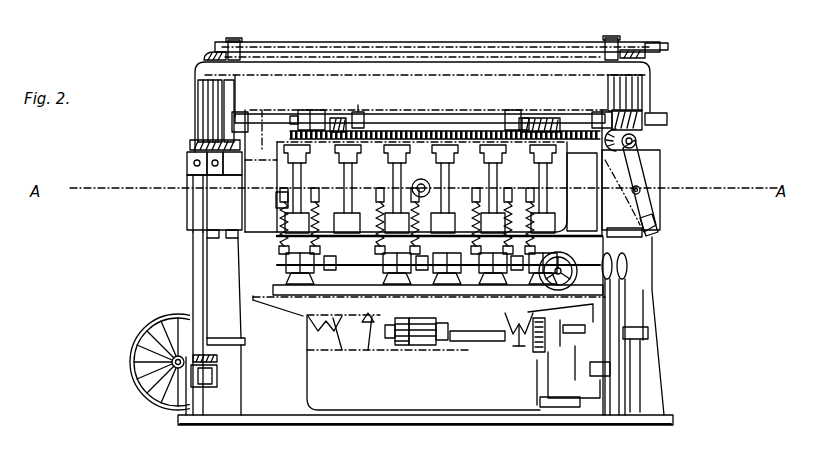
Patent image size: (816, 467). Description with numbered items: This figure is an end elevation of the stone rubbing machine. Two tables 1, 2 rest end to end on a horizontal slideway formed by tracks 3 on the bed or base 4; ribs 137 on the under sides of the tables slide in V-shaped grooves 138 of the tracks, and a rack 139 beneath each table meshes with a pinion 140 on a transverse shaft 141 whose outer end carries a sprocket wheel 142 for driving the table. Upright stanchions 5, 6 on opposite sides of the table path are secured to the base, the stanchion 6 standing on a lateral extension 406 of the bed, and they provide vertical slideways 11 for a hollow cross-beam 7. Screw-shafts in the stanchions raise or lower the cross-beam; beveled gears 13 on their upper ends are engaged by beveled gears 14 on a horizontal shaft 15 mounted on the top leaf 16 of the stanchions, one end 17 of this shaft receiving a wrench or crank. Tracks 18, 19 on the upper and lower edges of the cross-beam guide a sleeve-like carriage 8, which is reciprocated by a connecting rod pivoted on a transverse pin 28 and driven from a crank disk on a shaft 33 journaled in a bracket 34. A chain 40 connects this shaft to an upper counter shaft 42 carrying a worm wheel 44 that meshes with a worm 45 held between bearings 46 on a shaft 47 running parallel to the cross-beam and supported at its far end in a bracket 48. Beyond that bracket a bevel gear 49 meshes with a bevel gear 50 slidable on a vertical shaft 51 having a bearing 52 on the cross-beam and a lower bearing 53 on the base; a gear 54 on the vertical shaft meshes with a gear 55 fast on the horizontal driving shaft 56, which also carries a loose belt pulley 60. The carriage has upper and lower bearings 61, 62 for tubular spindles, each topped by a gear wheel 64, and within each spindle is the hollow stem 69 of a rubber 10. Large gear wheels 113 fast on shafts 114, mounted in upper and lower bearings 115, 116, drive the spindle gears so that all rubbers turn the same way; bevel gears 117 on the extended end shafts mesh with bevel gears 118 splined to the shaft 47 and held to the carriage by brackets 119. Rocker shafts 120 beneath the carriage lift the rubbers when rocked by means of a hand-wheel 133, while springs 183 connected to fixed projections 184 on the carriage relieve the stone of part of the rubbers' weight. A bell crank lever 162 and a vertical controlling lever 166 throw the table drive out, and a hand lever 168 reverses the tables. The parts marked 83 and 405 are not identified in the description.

The table 1 is at (366, 315).
The table 2 is at (314, 182).
The tracks 3 is at (313, 318).
The bed or base 4 is at (443, 362).
The stanchion 5 is at (192, 267).
The stanchion 6 is at (640, 272).
The cross-beam 7 is at (261, 171).
The carriage 8 is at (439, 173).
The rubbers 10 is at (280, 284).
The vertical slideways 11 is at (643, 92).
The beveled gears 13 is at (213, 53).
The beveled gears 14 is at (234, 41).
The horizontal shaft 15 is at (410, 43).
The top leaf 16 is at (352, 63).
The end of shaft 17 is at (670, 46).
The track 18 is at (261, 158).
The track 19 is at (250, 241).
The transverse pin 28 is at (421, 179).
The shaft 33 is at (641, 190).
The bracket 34 is at (656, 222).
The chain 40 is at (660, 164).
The upper counter shaft 42 is at (640, 142).
The worm wheel 44 is at (650, 128).
The worm 45 is at (640, 110).
The bearings 46 is at (606, 114).
The shaft 47 is at (425, 115).
The bracket 48 is at (232, 166).
The bevel gear 49 is at (213, 107).
The bevel gear 50 is at (192, 143).
The vertical shaft 51 is at (202, 206).
The bearing 52 is at (186, 164).
The lower bearing 53 is at (218, 378).
The gear 54 is at (215, 364).
The gear 55 is at (170, 358).
The horizontal driving shaft 56 is at (170, 374).
The loose belt pulley 60 is at (130, 378).
The upper bearings 61 is at (409, 189).
The lower bearings 62 is at (509, 194).
The gear wheel 64 is at (393, 133).
The stem 69 is at (282, 246).
The plunger 83 is at (392, 184).
The large gear wheels 113 is at (447, 132).
The shafts 114 is at (344, 190).
The upper bearings 115 is at (352, 140).
The lower bearings 116 is at (338, 317).
The bevel gears 117 is at (338, 117).
The bevel gears 118 is at (521, 110).
The brackets 119 is at (311, 117).
The rocker shafts 120 is at (372, 347).
The hand-wheel 133 is at (571, 262).
The ribs 137 is at (520, 320).
The V-shaped grooves 138 is at (514, 340).
The rack 139 is at (416, 318).
The pinion 140 is at (423, 346).
The shaft 141 is at (478, 342).
The sprocket wheel 142 is at (533, 354).
The bell crank lever 162 is at (589, 459).
The vertical controlling lever 166 is at (627, 283).
The hand lever 168 is at (653, 298).
The springs 183 is at (467, 212).
The fixed projections 184 is at (277, 200).
The base plate 405 is at (220, 410).
The lateral extension 406 is at (655, 383).